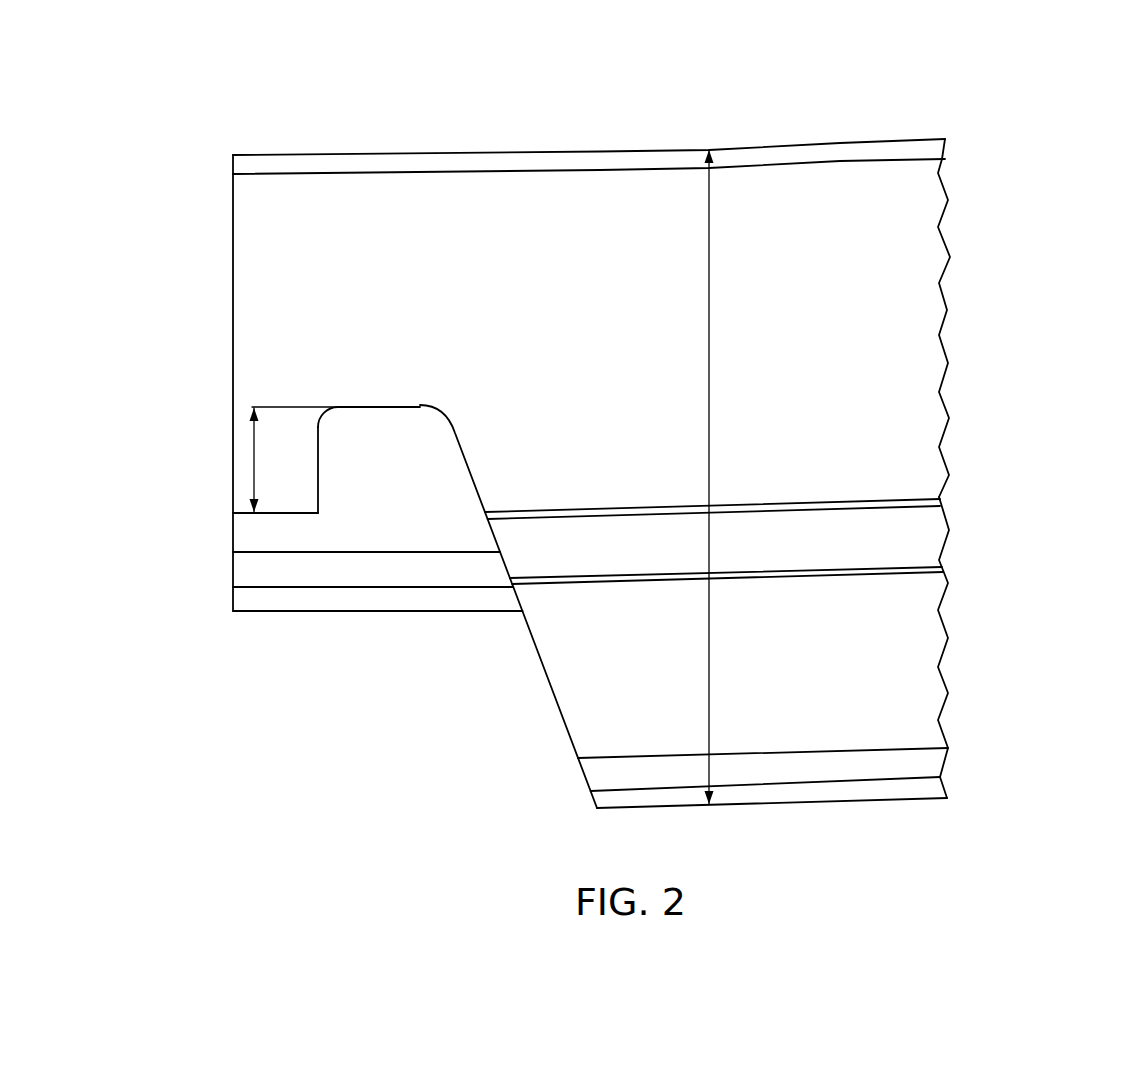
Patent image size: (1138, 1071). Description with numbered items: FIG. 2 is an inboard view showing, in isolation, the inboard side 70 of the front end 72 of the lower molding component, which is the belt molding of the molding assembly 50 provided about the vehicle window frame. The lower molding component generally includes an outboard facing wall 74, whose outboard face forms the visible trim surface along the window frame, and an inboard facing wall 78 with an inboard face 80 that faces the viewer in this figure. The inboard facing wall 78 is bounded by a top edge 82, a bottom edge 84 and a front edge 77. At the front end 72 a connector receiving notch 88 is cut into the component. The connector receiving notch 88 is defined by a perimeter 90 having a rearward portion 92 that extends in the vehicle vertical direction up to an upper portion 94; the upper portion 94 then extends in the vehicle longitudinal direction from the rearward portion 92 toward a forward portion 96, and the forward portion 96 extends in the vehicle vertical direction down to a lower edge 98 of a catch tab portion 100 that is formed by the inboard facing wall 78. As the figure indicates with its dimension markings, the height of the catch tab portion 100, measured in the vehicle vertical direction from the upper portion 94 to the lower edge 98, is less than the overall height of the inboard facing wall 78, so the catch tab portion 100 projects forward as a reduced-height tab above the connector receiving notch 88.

The molding assembly 50 is at (601, 458).
The inboard side 70 is at (589, 132).
The front end 72 is at (518, 332).
The outboard facing wall 74 is at (445, 572).
The front edge 77 is at (233, 316).
The inboard facing wall 78 is at (930, 632).
The inboard face 80 is at (930, 304).
The top edge 82 is at (635, 151).
The bottom edge 84 is at (856, 801).
The connector receiving notch 88 is at (366, 595).
The perimeter 90 is at (468, 461).
The rearward portion 92 is at (552, 690).
The upper portion 94 is at (386, 405).
The forward portion 96 is at (317, 488).
The lower edge 98 is at (268, 514).
The catch tab portion 100 is at (266, 450).